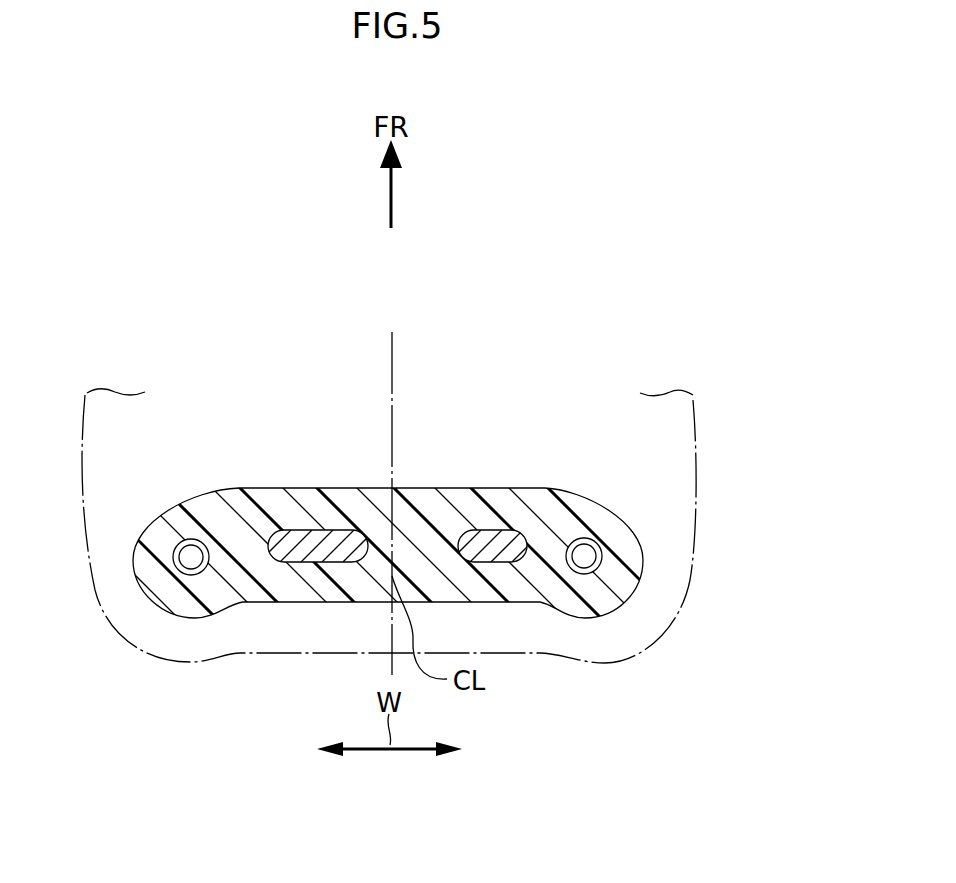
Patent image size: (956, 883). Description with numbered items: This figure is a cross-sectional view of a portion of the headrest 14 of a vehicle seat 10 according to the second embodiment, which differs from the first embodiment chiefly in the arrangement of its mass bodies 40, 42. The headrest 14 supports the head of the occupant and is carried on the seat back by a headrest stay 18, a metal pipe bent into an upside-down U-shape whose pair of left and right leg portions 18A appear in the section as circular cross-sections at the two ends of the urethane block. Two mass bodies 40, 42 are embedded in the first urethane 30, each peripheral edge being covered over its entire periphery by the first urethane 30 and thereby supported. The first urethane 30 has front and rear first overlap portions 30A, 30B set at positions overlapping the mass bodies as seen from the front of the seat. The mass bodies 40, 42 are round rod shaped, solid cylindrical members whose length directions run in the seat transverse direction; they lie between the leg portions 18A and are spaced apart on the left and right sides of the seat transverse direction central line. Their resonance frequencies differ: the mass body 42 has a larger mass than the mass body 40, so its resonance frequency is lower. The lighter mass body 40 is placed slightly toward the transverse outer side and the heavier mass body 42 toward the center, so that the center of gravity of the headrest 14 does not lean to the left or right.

The vehicle seat 10 is at (682, 308).
The headrest 14 is at (708, 440).
The headrest stay 18 is at (387, 556).
The leg portions 18A is at (207, 538).
The first urethane 30 is at (525, 488).
The first overlap portion 30A is at (320, 500).
The first overlap portion 30B is at (330, 594).
The mass body 40 is at (472, 530).
The mass body 42 is at (306, 528).